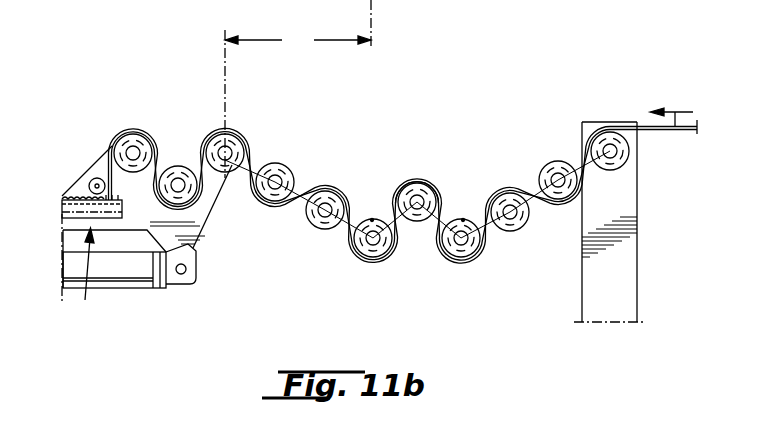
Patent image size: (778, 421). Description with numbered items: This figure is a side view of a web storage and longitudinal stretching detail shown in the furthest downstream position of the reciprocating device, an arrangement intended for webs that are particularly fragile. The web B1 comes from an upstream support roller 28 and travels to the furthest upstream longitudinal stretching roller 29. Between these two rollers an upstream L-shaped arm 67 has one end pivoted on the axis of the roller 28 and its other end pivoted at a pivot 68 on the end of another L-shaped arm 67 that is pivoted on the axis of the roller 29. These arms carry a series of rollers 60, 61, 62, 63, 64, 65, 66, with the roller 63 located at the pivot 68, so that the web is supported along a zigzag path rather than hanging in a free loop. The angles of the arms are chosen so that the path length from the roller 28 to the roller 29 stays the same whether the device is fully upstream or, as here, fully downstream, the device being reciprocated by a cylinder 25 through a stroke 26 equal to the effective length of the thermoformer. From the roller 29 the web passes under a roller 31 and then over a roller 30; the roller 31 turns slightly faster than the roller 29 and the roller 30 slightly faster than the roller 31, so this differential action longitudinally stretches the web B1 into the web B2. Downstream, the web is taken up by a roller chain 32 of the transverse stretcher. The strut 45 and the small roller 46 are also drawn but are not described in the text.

The cylinder 25 is at (118, 276).
The stroke 26 is at (298, 89).
The upstream support roller 28 is at (630, 152).
The longitudinal stretching roller 29 is at (238, 138).
The roller 30 is at (131, 134).
The roller 31 is at (176, 168).
The roller chain 32 is at (83, 277).
The strut / lever 45 is at (198, 242).
The small guide roller 46 is at (92, 180).
The roller 60 is at (567, 200).
The roller 61 is at (523, 228).
The roller 62 is at (467, 258).
The roller 63 is at (416, 226).
The roller 64 is at (369, 257).
The roller 65 is at (318, 228).
The roller 66 is at (265, 199).
The L-shaped arm 67 is at (308, 178).
The pivot 68 is at (417, 182).
The web B1 is at (625, 128).
The web B2 is at (113, 148).